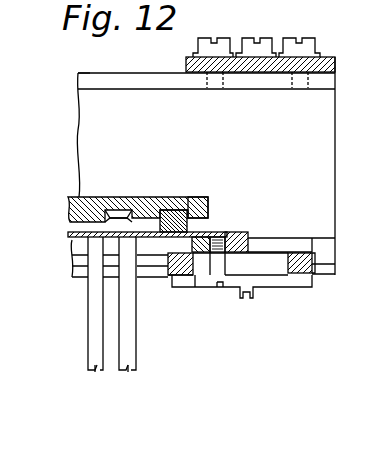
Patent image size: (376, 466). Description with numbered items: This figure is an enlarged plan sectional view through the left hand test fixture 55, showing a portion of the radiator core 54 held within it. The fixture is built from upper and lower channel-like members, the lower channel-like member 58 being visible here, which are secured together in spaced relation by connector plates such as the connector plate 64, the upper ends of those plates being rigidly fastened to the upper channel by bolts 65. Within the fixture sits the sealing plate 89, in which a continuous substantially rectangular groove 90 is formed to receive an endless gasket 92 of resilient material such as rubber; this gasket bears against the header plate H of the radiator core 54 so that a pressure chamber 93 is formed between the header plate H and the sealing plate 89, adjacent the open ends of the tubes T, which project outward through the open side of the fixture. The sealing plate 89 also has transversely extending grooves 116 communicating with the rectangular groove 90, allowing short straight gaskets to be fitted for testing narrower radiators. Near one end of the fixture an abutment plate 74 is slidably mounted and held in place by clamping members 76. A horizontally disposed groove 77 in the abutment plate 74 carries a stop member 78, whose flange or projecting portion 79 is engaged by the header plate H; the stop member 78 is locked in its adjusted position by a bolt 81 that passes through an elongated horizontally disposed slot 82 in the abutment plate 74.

The test fixture 55 is at (146, 69).
The lower channel-like member 58 is at (102, 67).
The connector plate 64 is at (336, 57).
The bolts 65 is at (293, 38).
The sealing plate 89 is at (70, 190).
The pressure chamber 93 is at (88, 228).
The transversely extending grooves 116 is at (117, 209).
The continuous substantially rectangular groove 90 is at (175, 209).
The endless gasket 92 is at (186, 213).
The stop member 78 is at (207, 235).
The flange or projecting portion 79 is at (246, 232).
The header plate H is at (221, 238).
The bolt 81 is at (213, 265).
The horizontally disposed groove 77 is at (307, 247).
The abutment plate 74 is at (314, 273).
The elongated horizontally disposed slot 82 is at (284, 264).
The clamping members 76 is at (265, 281).
The radiator core 54 is at (82, 334).
The tubes T is at (130, 373).